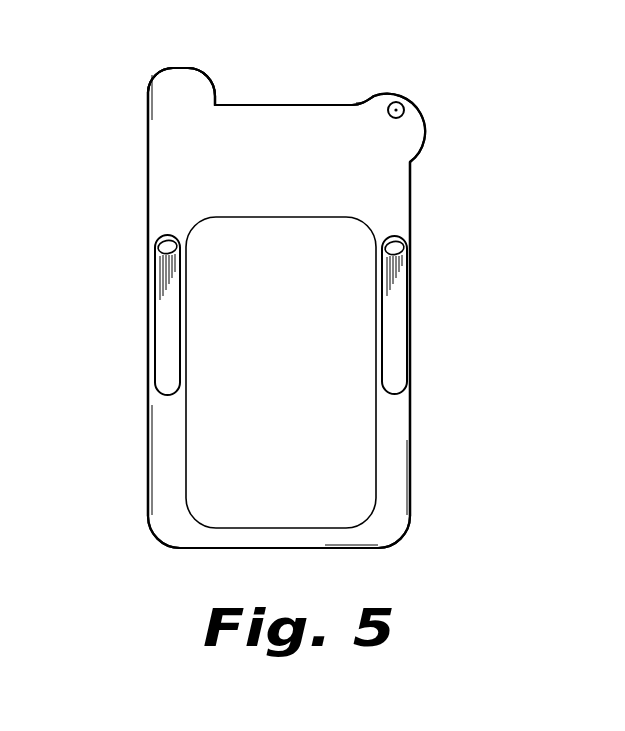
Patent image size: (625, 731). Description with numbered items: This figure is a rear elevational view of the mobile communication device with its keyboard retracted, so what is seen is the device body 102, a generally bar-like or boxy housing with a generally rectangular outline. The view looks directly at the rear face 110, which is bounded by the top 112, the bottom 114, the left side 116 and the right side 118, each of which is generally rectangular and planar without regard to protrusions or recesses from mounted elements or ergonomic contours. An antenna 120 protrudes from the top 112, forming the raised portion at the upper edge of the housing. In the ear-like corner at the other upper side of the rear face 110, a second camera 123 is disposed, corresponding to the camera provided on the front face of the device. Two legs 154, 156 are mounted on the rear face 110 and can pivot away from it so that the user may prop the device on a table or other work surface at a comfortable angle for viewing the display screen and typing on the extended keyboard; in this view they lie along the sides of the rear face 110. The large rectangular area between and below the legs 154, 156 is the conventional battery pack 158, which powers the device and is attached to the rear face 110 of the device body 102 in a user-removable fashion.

The device body 102 is at (418, 197).
The rear face 110 is at (148, 177).
The top 112 is at (268, 104).
The bottom 114 is at (310, 548).
The left side 116 is at (411, 477).
The right side 118 is at (148, 485).
The antenna 120 is at (156, 80).
The second camera 123 is at (407, 97).
The leg 154 is at (157, 330).
The leg 156 is at (405, 298).
The battery pack 158 is at (368, 515).